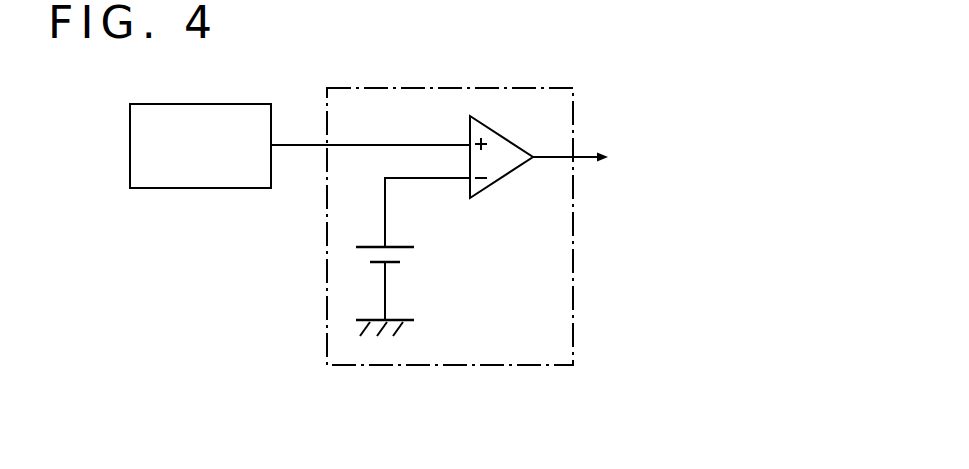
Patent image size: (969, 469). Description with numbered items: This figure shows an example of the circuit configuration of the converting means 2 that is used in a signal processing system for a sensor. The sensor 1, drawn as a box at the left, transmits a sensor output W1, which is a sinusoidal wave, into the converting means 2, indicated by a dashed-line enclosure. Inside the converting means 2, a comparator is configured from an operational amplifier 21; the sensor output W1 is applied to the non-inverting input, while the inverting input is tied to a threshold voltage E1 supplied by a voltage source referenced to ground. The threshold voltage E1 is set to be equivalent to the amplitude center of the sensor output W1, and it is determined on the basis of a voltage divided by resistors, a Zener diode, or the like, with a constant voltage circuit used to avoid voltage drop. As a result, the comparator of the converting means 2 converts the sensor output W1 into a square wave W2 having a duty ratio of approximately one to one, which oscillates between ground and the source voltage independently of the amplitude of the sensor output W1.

The sensor 1 is at (195, 104).
The converting means 2 is at (575, 292).
The operational amplifier 21 is at (500, 180).
The threshold voltage E1 is at (401, 283).
The sensor output W1 is at (370, 133).
The square wave W2 is at (589, 158).